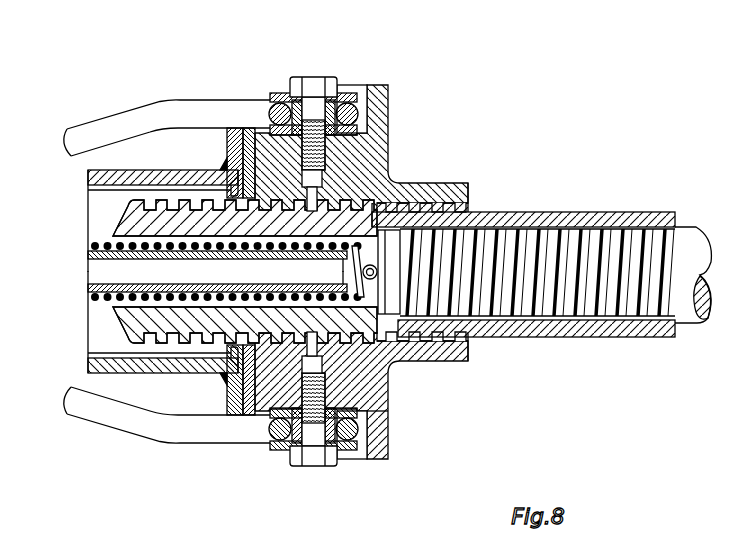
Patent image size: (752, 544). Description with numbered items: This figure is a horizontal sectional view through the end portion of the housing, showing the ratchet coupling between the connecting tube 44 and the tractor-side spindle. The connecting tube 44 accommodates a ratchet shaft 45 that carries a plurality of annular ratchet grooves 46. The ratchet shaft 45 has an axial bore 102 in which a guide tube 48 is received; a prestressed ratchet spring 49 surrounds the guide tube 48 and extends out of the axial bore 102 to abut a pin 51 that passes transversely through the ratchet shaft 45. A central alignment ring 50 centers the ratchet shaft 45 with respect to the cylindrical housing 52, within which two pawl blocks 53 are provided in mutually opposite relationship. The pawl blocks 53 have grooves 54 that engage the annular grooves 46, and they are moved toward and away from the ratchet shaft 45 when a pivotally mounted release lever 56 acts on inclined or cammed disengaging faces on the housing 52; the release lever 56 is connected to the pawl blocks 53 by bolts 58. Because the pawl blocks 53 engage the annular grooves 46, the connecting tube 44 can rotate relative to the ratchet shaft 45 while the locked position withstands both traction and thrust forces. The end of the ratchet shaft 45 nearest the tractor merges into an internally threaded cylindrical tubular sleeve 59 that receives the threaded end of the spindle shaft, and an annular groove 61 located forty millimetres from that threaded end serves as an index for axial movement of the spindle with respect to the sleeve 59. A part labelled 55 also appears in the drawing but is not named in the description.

The connecting tube 44 is at (100, 181).
The ratchet shaft 45 is at (210, 222).
The annular ratchet grooves 46 is at (150, 338).
The guide tube 48 is at (88, 288).
The ratchet spring 49 is at (92, 247).
The central alignment ring 50 is at (243, 400).
The pin 51 is at (377, 266).
The cylindrical housing 52 is at (383, 113).
The pawl blocks 53 is at (328, 452).
The grooves 54 is at (388, 410).
The cap 55 is at (356, 92).
The release lever 56 is at (86, 406).
The bolts 58 is at (312, 77).
The cylindrical tubular sleeve 59 is at (620, 212).
The annular groove 61 is at (554, 308).
The axial bore 102 is at (363, 305).